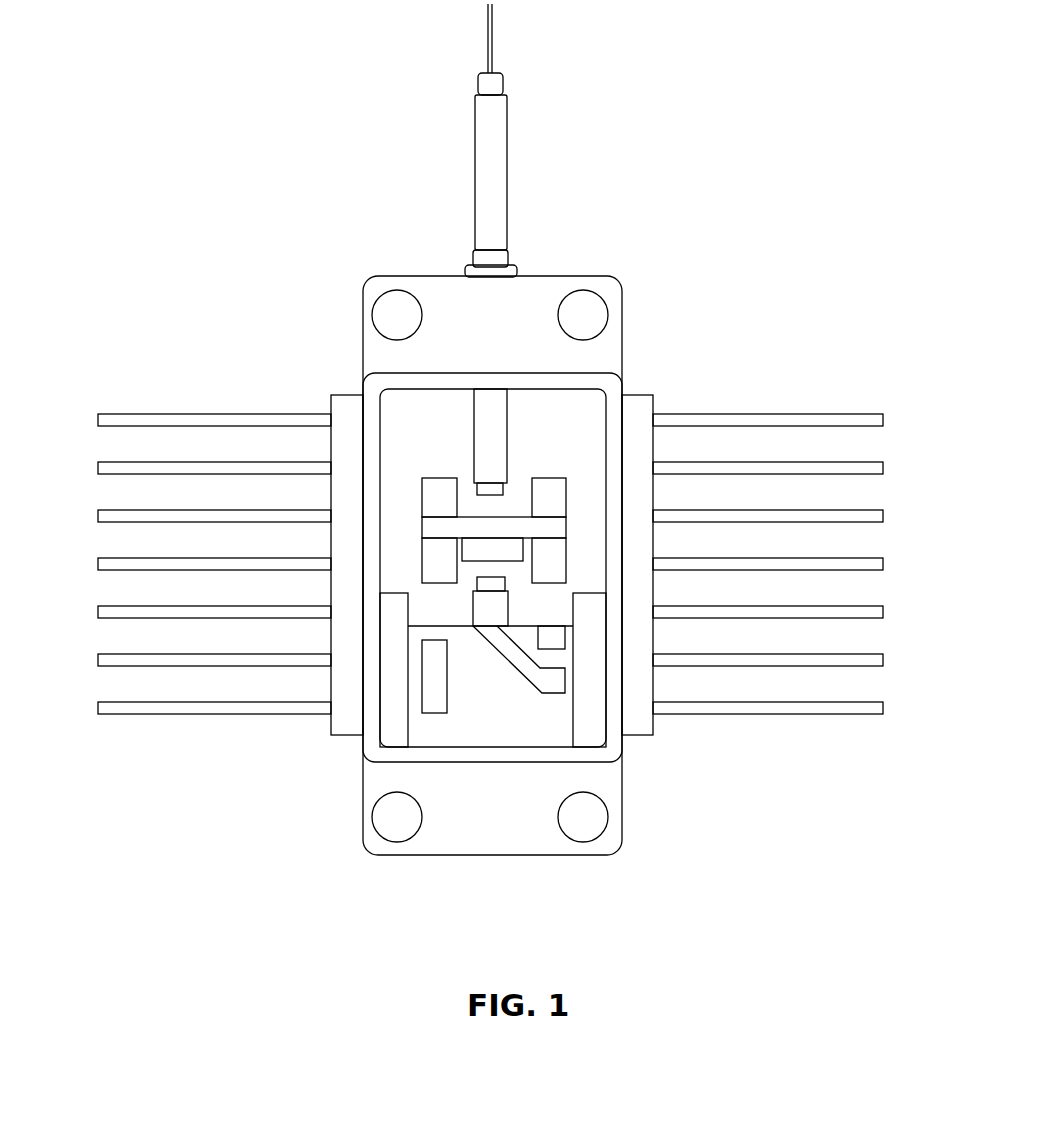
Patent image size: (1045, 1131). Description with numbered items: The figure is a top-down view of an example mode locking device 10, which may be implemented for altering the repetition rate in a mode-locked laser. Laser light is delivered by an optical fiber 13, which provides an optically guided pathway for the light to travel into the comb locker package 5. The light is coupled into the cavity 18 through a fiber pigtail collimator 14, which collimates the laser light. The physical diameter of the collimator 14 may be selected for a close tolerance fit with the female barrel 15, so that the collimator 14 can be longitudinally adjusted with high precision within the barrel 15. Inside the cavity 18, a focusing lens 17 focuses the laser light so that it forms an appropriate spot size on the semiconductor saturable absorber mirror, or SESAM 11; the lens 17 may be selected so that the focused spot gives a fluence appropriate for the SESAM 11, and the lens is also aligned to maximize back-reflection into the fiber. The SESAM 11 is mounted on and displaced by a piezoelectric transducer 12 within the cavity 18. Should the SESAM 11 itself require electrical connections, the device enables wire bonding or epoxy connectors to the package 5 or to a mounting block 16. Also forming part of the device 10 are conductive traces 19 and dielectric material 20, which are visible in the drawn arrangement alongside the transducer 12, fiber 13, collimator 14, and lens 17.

The comb locker package 5 is at (474, 762).
The mode locking device 10 is at (678, 250).
The semiconductor saturable absorber mirror 11 is at (490, 585).
The piezoelectric transducer 12 is at (493, 608).
The optical fiber 13 is at (495, 25).
The fiber pigtail collimator 14 is at (483, 203).
The female barrel 15 is at (485, 482).
The mounting block 16 is at (440, 502).
The focusing lens 17 is at (483, 550).
The cavity 18 is at (555, 443).
The conductive traces 19 is at (557, 697).
The dielectric material 20 is at (477, 727).